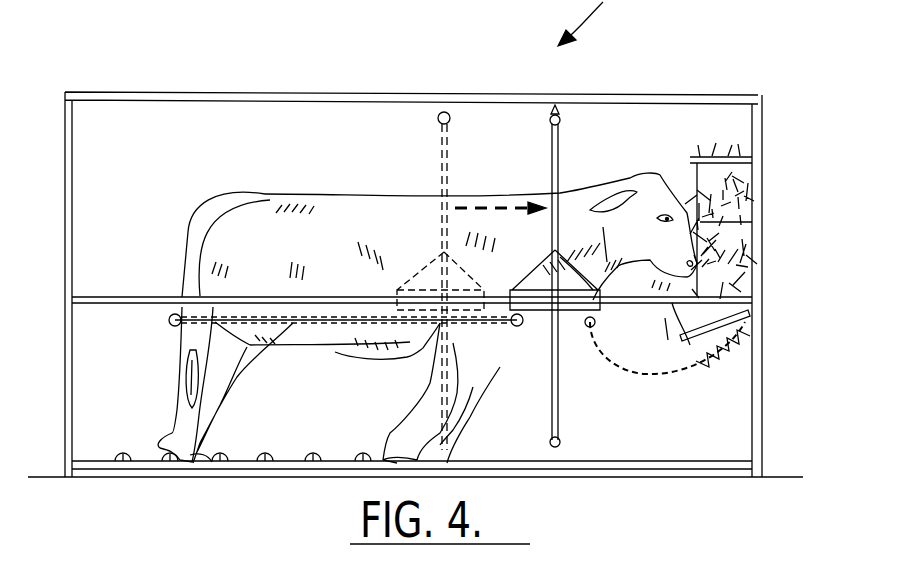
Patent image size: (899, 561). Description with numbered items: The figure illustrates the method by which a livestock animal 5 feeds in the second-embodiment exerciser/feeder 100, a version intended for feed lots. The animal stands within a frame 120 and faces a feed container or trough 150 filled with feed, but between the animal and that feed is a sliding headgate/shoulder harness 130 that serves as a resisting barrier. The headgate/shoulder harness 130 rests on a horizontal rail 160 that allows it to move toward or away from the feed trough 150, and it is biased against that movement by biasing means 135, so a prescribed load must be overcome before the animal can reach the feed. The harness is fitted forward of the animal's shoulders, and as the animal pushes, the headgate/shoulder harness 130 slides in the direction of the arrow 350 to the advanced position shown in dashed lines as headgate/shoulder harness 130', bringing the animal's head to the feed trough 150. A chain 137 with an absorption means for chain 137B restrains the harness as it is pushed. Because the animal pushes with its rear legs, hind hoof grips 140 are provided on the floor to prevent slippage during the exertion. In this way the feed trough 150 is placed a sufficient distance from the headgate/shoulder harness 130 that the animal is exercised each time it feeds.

The cow 5 is at (250, 235).
The exerciser/feeder 100 is at (618, 23).
The frame 120 is at (200, 97).
The headgate/shoulder harness 130 is at (582, 276).
The rod in alternate position 130' is at (414, 281).
The biasing means 135 is at (305, 343).
The chain 137 is at (636, 375).
The absorption means for chain 137B is at (758, 354).
The hoof grips 140 is at (203, 470).
The feed container or trough 150 is at (757, 182).
The rail 160 is at (760, 275).
The arrow 350 is at (497, 197).